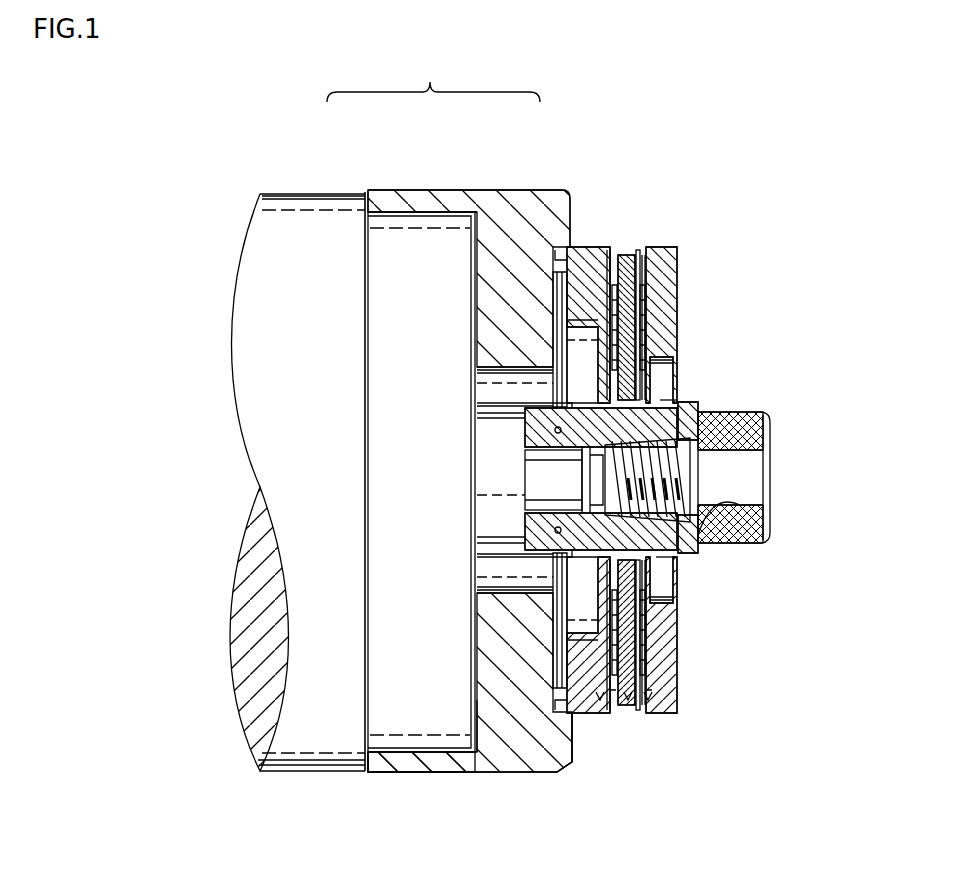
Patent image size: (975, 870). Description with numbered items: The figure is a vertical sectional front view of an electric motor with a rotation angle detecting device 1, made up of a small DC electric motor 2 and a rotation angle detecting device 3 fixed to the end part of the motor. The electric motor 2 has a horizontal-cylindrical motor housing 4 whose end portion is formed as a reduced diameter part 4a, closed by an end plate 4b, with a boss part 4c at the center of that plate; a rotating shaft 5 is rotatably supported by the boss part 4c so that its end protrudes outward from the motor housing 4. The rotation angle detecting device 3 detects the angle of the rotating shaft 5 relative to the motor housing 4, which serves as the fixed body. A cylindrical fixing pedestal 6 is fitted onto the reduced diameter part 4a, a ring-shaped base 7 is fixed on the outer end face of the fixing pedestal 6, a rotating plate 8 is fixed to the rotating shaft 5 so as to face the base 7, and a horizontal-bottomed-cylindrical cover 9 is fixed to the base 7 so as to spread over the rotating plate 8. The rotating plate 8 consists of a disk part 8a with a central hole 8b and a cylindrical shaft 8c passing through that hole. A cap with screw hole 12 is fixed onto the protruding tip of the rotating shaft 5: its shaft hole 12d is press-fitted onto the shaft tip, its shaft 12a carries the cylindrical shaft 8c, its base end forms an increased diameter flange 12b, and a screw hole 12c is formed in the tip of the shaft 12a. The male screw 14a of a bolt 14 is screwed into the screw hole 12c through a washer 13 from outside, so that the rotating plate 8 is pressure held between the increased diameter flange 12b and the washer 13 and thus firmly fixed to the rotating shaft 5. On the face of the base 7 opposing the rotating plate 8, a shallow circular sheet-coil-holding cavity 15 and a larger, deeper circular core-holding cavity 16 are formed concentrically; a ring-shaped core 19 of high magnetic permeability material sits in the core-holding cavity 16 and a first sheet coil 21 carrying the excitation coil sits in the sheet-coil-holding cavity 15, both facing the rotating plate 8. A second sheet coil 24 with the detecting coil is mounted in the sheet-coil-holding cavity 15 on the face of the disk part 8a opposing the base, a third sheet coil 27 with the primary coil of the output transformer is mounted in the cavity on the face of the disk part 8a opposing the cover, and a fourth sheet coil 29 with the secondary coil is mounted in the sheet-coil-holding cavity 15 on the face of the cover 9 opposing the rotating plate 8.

The electric motor with rotation angle detecting device 1 is at (433, 75).
The electric motor 2 is at (336, 181).
The rotation angle detecting device 3 is at (502, 178).
The motor housing 4 is at (290, 190).
The reduced diameter part 4a is at (402, 762).
The end plate 4b is at (510, 530).
The boss part 4c is at (486, 703).
The rotating shaft 5 is at (690, 470).
The fixing pedestal 6 is at (572, 740).
The base 7 is at (580, 247).
The rotating plate 8 is at (627, 262).
The disk part 8a is at (642, 268).
The central hole 8b is at (668, 398).
The cylindrical shaft 8c is at (658, 560).
The cover 9 is at (680, 270).
The cap with screw hole 12 is at (547, 400).
The shaft 12a is at (532, 367).
The increased diameter flange 12b is at (533, 403).
The screw hole 12c is at (745, 540).
The shaft hole 12d is at (548, 462).
The washer 13 is at (690, 408).
The bolt 14 is at (764, 441).
The male screw 14a is at (735, 412).
The sheet-coil-holding cavity 15 is at (613, 330).
The core-holding cavity 16 is at (603, 300).
The ring-shaped core 19 is at (558, 284).
The first sheet coil 21 is at (592, 703).
The second sheet coil 24 is at (632, 703).
The third sheet coil 27 is at (650, 703).
The fourth sheet coil 29 is at (660, 695).